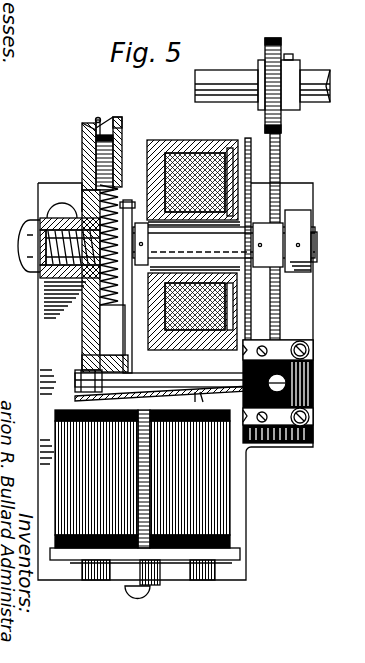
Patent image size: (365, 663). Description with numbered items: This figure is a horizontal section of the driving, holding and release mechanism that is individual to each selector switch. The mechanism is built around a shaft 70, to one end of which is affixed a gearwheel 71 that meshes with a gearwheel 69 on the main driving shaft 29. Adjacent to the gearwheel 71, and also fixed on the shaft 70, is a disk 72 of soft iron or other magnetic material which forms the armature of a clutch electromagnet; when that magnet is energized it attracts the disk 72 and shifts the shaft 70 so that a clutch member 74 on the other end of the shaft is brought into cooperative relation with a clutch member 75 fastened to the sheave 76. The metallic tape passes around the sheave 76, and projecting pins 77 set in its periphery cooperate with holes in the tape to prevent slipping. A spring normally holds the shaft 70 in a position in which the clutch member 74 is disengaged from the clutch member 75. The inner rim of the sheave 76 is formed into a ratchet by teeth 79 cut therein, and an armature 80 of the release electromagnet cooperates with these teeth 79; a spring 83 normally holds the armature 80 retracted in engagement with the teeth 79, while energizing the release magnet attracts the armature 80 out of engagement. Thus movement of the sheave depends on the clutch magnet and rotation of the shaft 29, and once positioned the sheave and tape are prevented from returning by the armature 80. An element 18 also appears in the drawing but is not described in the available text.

The adjusting nut and screw 18 is at (42, 273).
The main driving shaft 29 is at (227, 72).
The gearwheel 69 is at (284, 57).
The shaft 70 is at (225, 241).
The gearwheel 71 is at (281, 171).
The disk 72 is at (247, 140).
The clutch member 74 is at (133, 286).
The clutch member 75 is at (107, 309).
The sheave 76 is at (82, 136).
The projecting pins 77 is at (97, 119).
The teeth 79 is at (122, 123).
The armature 80 is at (171, 386).
The spring 83 is at (138, 550).